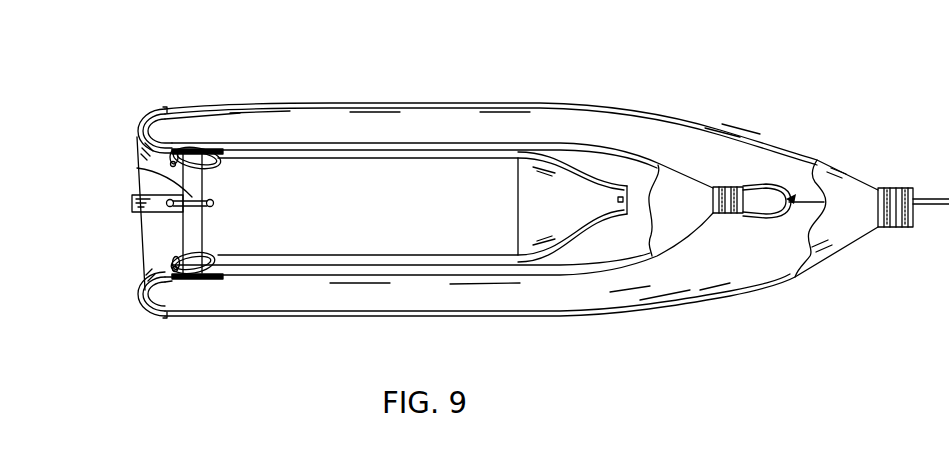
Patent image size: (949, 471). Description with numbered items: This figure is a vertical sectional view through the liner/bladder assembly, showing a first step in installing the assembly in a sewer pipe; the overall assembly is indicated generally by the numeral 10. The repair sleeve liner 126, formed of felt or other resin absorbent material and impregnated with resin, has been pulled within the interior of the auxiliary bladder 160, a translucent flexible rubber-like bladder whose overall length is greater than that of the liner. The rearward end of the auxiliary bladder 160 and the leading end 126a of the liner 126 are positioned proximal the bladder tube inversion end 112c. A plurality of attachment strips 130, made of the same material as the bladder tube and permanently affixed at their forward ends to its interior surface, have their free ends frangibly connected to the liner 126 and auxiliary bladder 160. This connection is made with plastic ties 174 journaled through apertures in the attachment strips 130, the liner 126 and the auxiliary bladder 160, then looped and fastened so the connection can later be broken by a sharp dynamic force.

The inflatable vessel 10 is at (858, 142).
The bladder tube inversion end 112c is at (147, 157).
The repair sleeve liner 126 is at (316, 237).
The leading end of liner 126a is at (217, 237).
The attachment strips 130 is at (140, 122).
The auxiliary bladder 160 is at (453, 267).
The plastic ties 174 is at (172, 160).